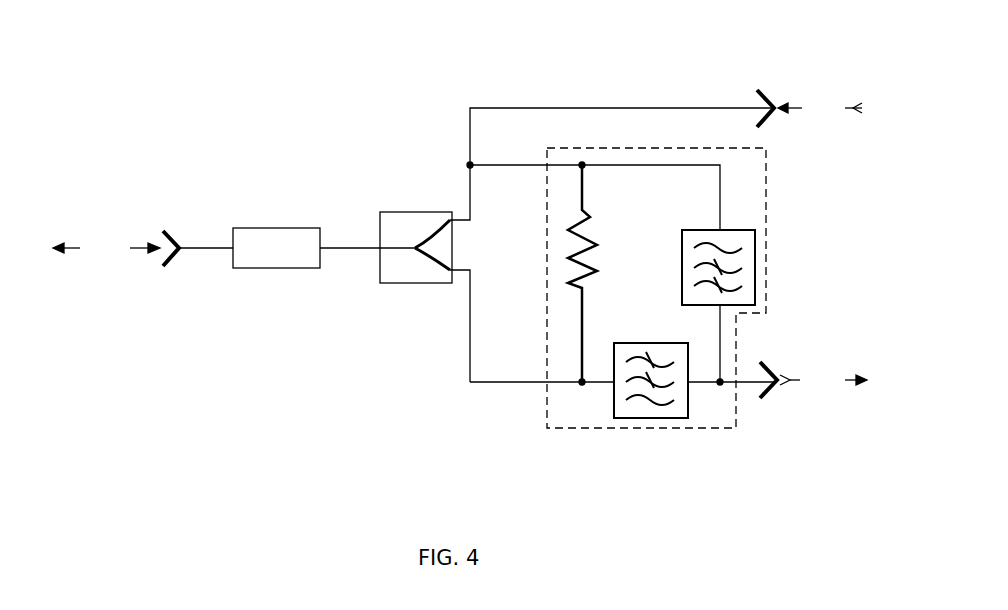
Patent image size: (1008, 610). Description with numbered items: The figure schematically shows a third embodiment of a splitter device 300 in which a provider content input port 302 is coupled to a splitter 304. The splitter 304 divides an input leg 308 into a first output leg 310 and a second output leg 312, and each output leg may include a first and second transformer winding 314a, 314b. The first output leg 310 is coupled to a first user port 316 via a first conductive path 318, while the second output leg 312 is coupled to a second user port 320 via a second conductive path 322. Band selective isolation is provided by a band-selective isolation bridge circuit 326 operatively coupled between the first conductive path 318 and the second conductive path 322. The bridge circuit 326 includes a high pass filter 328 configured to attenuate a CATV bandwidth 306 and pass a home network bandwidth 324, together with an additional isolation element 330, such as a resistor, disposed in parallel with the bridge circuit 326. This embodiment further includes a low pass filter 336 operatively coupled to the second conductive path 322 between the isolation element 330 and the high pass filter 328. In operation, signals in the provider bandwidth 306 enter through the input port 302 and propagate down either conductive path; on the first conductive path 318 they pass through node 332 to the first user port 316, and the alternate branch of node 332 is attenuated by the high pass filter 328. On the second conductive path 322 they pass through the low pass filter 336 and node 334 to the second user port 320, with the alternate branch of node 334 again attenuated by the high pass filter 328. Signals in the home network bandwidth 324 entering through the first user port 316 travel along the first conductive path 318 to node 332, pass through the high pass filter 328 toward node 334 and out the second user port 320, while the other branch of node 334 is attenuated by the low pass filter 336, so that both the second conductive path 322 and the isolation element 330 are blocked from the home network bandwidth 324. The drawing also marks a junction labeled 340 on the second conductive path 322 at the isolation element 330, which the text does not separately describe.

The splitter device 300 is at (438, 88).
The provider content input port 302 is at (210, 250).
The splitter 304 is at (378, 232).
The CATV bandwidth 306 is at (106, 248).
The input leg 308 is at (392, 250).
The first output leg 310 is at (470, 200).
The second output leg 312 is at (470, 312).
The first transformer winding 314a is at (437, 222).
The second transformer winding 314b is at (432, 263).
The first user port 316 is at (725, 108).
The first conductive path 318 is at (585, 108).
The second user port 320 is at (768, 392).
The second conductive path 322 is at (480, 385).
The home network bandwidth 324 is at (822, 244).
The band-selective isolation bridge circuit 326 is at (767, 178).
The high pass filter 328 is at (760, 258).
The isolation element 330 is at (590, 210).
The node 332 is at (468, 164).
The node 334 is at (718, 385).
The low pass filter 336 is at (640, 418).
The node 340 is at (580, 385).